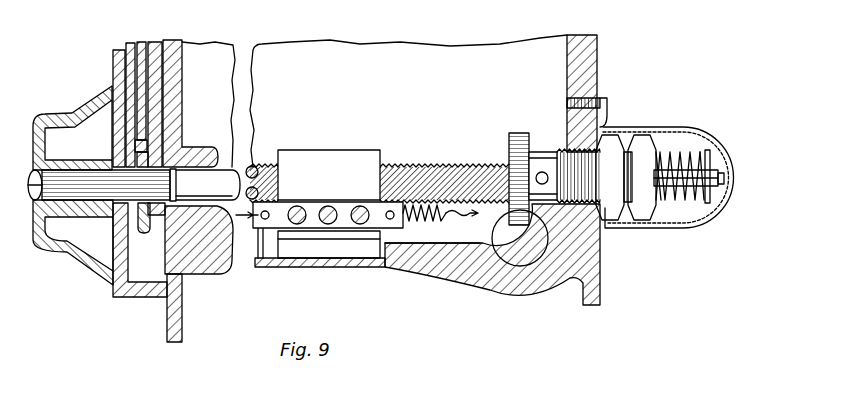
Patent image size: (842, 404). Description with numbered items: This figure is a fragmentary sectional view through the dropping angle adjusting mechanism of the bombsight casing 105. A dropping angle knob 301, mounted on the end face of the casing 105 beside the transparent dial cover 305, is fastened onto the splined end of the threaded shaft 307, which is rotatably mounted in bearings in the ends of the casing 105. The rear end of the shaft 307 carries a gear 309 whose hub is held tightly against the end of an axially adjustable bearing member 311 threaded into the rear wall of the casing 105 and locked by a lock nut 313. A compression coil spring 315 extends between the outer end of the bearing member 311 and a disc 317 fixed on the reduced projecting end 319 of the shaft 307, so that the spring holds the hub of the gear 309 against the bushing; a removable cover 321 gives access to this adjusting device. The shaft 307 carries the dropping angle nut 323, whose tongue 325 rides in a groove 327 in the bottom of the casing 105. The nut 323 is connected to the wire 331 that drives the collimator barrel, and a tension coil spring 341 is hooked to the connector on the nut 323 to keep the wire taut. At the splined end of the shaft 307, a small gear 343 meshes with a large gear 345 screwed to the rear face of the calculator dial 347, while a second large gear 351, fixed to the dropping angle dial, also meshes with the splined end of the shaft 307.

The casing 105 is at (207, 275).
The dropping angle knob 301 is at (72, 260).
The transparent dial cover 305 is at (138, 297).
The threaded shaft 307 is at (458, 135).
The gear 309 is at (516, 133).
The bearing member 311 is at (620, 152).
The lock nut 313 is at (614, 135).
The compression coil spring 315 is at (677, 157).
The disc 317 is at (708, 157).
The reduced projecting end 319 is at (722, 177).
The removable cover 321 is at (660, 226).
The dropping angle nut 323 is at (343, 126).
The tongue 325 is at (342, 248).
The groove 327 is at (257, 262).
The wire 331 is at (476, 216).
The tension coil spring 341 is at (437, 235).
The small gear 343 is at (147, 233).
The large gear 345 is at (136, 43).
The calculator dial 347 is at (115, 50).
The large gear 351 is at (162, 42).